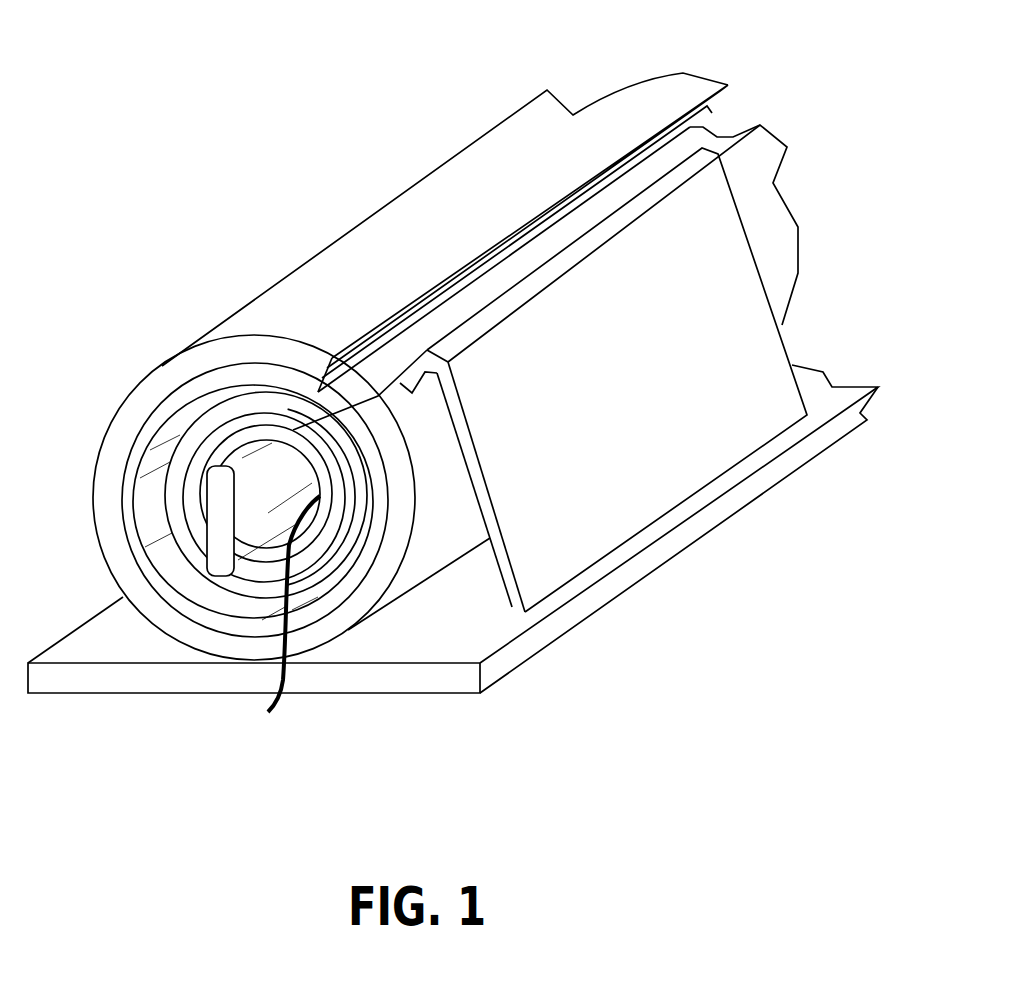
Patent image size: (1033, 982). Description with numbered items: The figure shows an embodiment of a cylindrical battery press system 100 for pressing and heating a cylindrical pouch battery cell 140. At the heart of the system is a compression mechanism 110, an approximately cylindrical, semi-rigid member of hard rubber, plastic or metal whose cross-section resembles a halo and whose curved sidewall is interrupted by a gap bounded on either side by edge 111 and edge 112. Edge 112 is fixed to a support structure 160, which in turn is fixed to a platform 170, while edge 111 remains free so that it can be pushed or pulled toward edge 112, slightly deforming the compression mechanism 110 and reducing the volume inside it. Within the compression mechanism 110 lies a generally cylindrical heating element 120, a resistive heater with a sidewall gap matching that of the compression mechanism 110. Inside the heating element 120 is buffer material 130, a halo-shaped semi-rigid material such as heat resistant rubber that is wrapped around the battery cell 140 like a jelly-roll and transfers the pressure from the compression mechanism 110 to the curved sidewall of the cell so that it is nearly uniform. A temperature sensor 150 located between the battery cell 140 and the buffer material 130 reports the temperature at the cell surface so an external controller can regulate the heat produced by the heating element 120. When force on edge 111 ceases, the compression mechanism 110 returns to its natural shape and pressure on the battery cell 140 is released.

The cylindrical battery press system 100 is at (137, 112).
The compression mechanism 110 is at (107, 421).
The edge 111 is at (413, 303).
The edge 112 is at (387, 392).
The heating element 120 is at (130, 541).
The buffer material 130 is at (200, 427).
The cylindrical pouch battery cell 140 is at (288, 494).
The temperature sensor 150 is at (283, 681).
The support structure 160 is at (697, 172).
The platform 170 is at (95, 696).